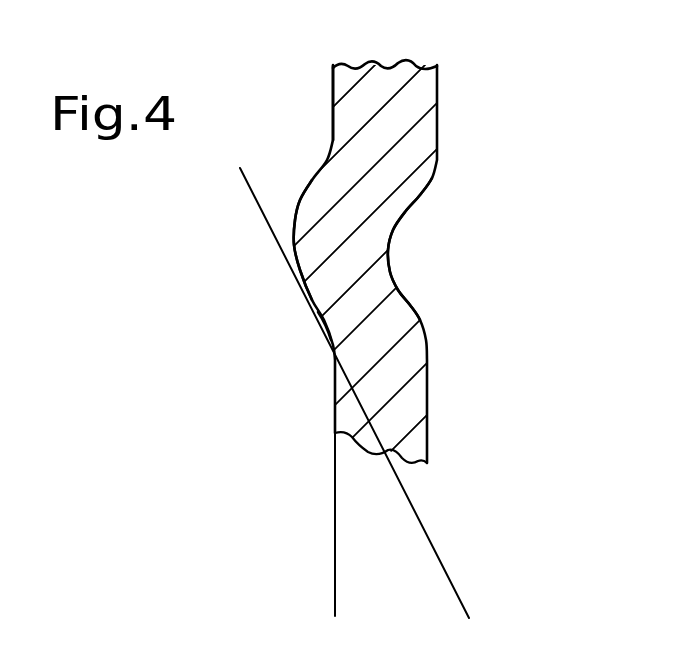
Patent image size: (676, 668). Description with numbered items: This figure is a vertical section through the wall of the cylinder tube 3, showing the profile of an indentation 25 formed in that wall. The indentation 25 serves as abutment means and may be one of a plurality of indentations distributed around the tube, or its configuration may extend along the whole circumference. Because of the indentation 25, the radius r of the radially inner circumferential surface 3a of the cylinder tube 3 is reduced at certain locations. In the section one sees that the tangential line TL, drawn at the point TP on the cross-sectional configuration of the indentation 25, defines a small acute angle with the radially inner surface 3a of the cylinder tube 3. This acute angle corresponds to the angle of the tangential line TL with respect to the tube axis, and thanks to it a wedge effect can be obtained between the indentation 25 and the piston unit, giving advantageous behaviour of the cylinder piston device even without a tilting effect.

The cylinder tube 3 is at (401, 424).
The radially inner surface 3a is at (326, 101).
The indentation 25 is at (416, 236).
The radius r is at (284, 262).
The point TP is at (323, 332).
The tangential line TL is at (457, 596).